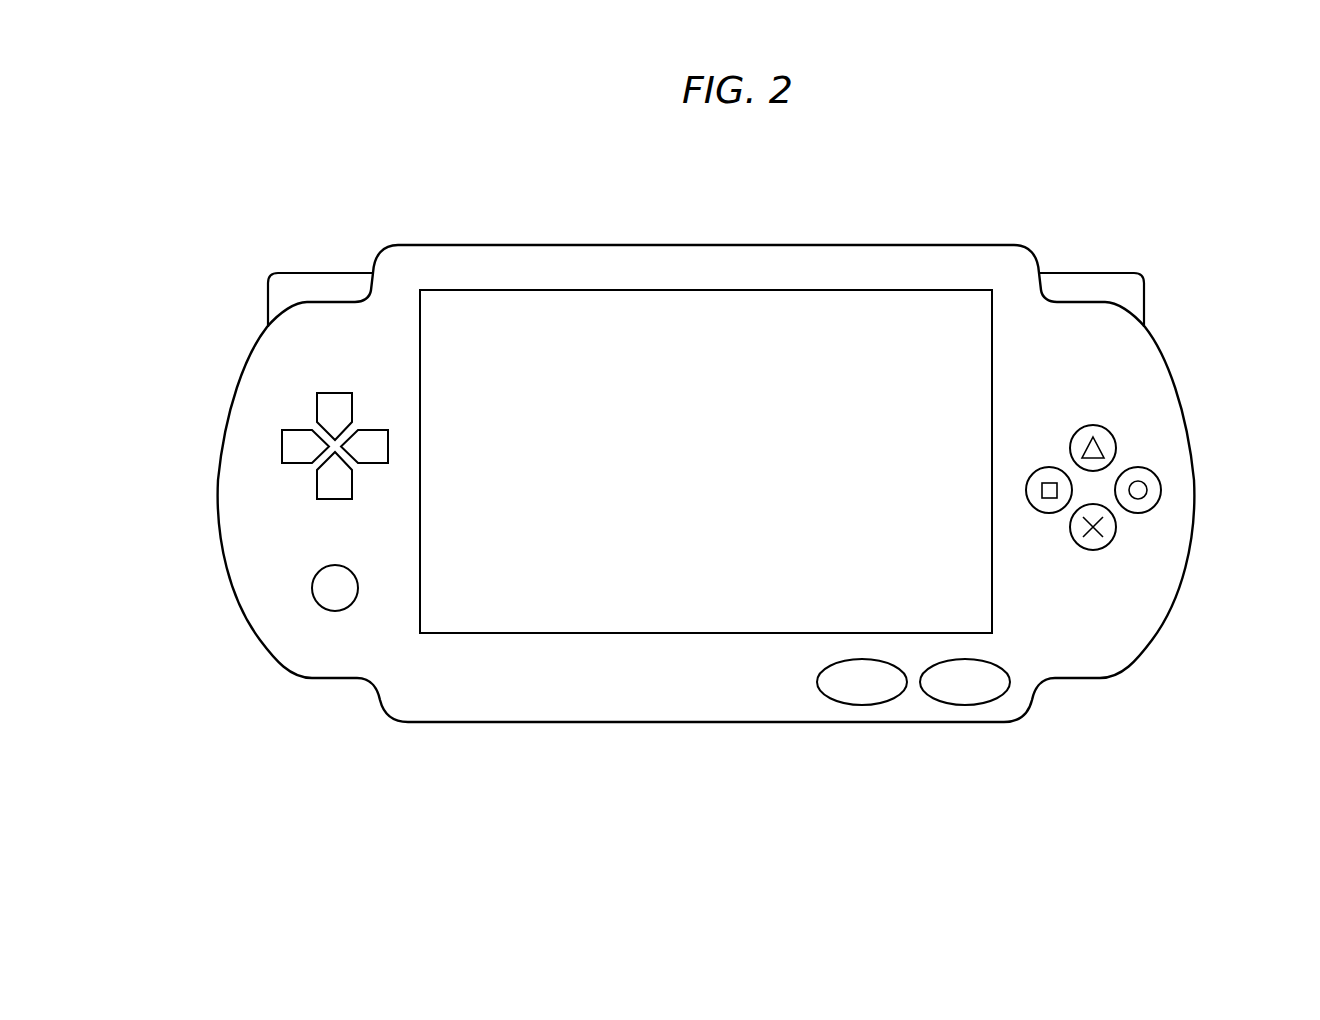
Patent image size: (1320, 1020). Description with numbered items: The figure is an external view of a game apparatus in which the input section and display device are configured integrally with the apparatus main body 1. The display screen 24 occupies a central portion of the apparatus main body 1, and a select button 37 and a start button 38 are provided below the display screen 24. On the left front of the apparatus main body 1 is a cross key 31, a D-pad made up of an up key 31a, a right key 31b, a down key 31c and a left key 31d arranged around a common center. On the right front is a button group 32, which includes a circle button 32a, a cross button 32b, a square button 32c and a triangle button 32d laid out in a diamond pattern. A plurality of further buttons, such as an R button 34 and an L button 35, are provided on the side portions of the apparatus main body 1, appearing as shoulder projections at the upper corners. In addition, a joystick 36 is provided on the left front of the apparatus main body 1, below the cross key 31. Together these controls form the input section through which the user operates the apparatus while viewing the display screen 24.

The apparatus main body 1 is at (738, 245).
The display screen 24 is at (922, 291).
The cross key 31 is at (333, 450).
The up key 31a is at (333, 402).
The right key 31b is at (372, 450).
The down key 31c is at (335, 487).
The left key 31d is at (294, 450).
The button group 32 is at (1150, 493).
The circle button 32a is at (1161, 490).
The cross button 32b is at (1113, 535).
The square button 32c is at (1047, 468).
The triangle button 32d is at (1093, 425).
The R button 34 is at (268, 308).
The L button 35 is at (1144, 290).
The joystick 36 is at (312, 588).
The select button 37 is at (865, 705).
The start button 38 is at (966, 705).